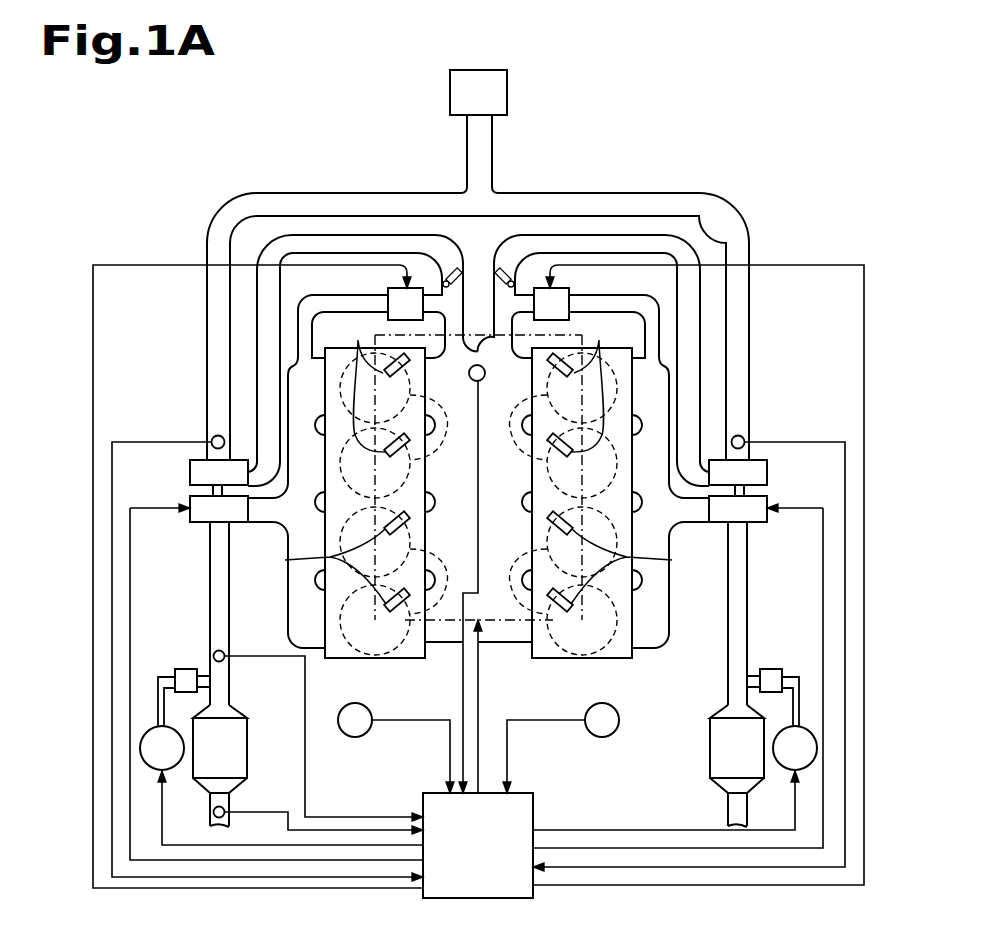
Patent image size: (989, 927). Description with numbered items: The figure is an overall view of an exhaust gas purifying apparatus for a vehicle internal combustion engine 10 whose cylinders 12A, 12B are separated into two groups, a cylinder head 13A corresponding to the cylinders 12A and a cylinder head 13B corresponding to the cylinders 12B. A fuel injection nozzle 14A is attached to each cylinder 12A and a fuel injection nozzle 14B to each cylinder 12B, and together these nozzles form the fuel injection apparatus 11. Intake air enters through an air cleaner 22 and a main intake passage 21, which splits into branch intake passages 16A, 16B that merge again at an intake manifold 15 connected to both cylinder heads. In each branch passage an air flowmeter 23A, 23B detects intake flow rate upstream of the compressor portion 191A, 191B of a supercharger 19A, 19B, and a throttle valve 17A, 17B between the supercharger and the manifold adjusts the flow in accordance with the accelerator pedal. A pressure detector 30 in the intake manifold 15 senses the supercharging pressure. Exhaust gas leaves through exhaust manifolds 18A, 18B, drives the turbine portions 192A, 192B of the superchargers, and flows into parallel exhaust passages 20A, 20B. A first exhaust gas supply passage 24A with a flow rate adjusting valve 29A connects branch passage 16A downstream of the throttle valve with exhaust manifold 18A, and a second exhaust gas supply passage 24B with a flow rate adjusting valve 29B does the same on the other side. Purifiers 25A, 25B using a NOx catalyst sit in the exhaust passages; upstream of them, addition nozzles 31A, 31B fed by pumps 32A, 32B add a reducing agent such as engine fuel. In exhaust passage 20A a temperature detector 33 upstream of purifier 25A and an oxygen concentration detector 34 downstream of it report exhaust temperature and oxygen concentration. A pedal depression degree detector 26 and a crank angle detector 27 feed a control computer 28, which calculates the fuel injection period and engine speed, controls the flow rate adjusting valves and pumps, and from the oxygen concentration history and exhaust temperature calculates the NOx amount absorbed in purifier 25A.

The internal combustion engine 10 is at (228, 152).
The fuel injection apparatus 11 is at (480, 510).
The cylinders 12A is at (405, 504).
The cylinders 12B is at (552, 504).
The cylinder head 13A is at (345, 660).
The cylinder head 13B is at (609, 655).
The fuel injection nozzle 14A is at (313, 461).
The fuel injection nozzle 14B is at (645, 461).
The intake manifold 15 is at (500, 644).
The branch intake passage 16A is at (340, 247).
The branch intake passage 16B is at (617, 247).
The throttle valve 17A is at (447, 262).
The throttle valve 17B is at (510, 262).
The exhaust manifold 18A is at (290, 628).
The exhaust manifold 18B is at (667, 628).
The supercharger 19A is at (174, 435).
The supercharger 19B is at (782, 435).
The compressor portion 191A is at (200, 465).
The compressor portion 191B is at (757, 465).
The turbine portion 192A is at (188, 505).
The turbine portion 192B is at (767, 505).
The exhaust passage 20A is at (210, 549).
The exhaust passage 20B is at (747, 549).
The main intake passage 21 is at (492, 135).
The air cleaner 22 is at (507, 92).
The air flowmeter 23A is at (218, 435).
The air flowmeter 23B is at (738, 435).
The first exhaust gas supply passage 24A is at (378, 304).
The second exhaust gas supply passage 24B is at (579, 304).
The purifier 25A is at (241, 750).
The purifier 25B is at (708, 750).
The pedal depression degree detector 26 is at (360, 735).
The crank angle detector 27 is at (597, 735).
The control computer 28 is at (533, 803).
The flow rate adjusting valve 29A is at (403, 262).
The flow rate adjusting valve 29B is at (554, 262).
The pressure detector 30 is at (485, 375).
The addition nozzle 31A is at (185, 668).
The addition nozzle 31B is at (772, 668).
The pump 32A is at (147, 731).
The pump 32B is at (825, 731).
The temperature detector 33 is at (224, 660).
The oxygen concentration detector 34 is at (213, 812).